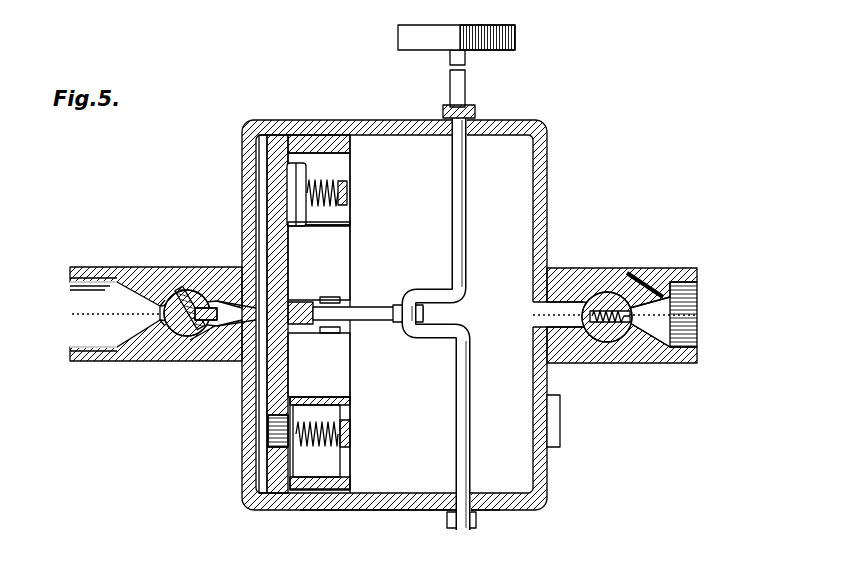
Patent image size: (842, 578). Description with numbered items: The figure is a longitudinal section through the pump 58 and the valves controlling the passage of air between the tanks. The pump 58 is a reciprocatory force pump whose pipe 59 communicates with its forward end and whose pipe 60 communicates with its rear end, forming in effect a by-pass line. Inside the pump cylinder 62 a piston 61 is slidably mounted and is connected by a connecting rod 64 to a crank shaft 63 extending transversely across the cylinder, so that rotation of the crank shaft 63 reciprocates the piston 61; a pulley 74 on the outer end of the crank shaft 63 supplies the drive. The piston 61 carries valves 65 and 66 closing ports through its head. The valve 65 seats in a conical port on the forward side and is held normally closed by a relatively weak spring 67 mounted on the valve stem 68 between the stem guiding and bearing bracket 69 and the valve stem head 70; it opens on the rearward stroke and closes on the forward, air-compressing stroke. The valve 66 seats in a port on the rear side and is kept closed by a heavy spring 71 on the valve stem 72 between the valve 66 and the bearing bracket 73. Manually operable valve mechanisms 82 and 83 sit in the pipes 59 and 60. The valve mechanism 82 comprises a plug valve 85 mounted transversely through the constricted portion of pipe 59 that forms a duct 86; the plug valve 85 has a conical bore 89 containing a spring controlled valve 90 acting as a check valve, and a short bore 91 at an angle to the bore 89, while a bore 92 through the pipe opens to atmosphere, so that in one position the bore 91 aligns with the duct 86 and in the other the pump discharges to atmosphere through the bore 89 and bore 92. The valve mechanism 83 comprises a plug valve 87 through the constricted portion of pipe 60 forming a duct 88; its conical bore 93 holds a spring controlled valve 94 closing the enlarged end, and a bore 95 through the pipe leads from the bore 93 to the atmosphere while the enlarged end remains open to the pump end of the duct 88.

The pump 58 is at (551, 212).
The pipe 59 is at (83, 267).
The pipe 60 is at (697, 282).
The piston 61 is at (285, 277).
The pump cylinder 62 is at (389, 508).
The crank shaft 63 is at (466, 345).
The connecting rod 64 is at (362, 306).
The valve 65 is at (262, 185).
The valve 66 is at (282, 432).
The spring 67 is at (316, 186).
The valve stem 68 is at (345, 190).
The stem guiding and bearing bracket 69 is at (308, 225).
The valve stem head 70 is at (347, 200).
The heavy spring 71 is at (322, 423).
The valve stem 72 is at (305, 440).
The bearing bracket 73 is at (350, 465).
The pulley 74 is at (515, 36).
The valve mechanism 82 is at (178, 340).
The valve mechanism 83 is at (613, 345).
The plug valve 85 is at (198, 306).
The duct 86 is at (226, 357).
The plug valve 87 is at (608, 292).
The duct 88 is at (556, 310).
The conical bore 89 is at (200, 362).
The spring controlled valve 90 is at (170, 292).
The short bore 91 is at (203, 292).
The bore 92 is at (163, 305).
The conical bore 93 is at (606, 330).
The spring controlled valve 94 is at (580, 345).
The bore 95 is at (655, 280).